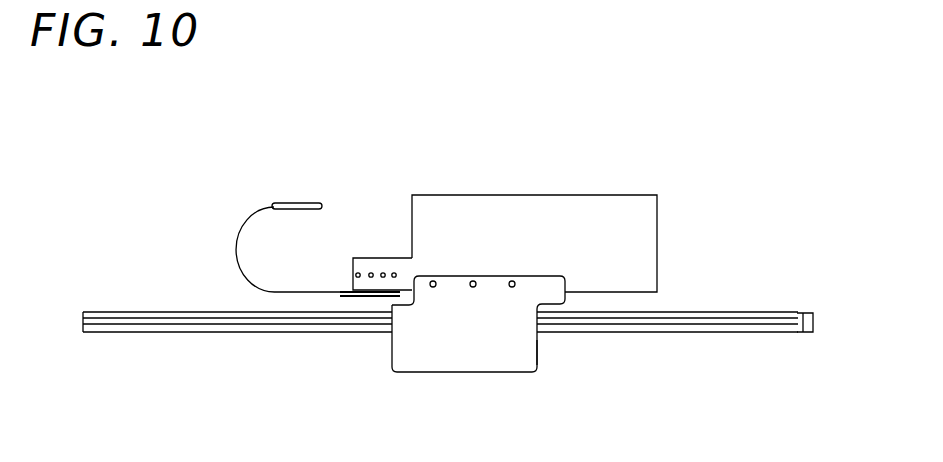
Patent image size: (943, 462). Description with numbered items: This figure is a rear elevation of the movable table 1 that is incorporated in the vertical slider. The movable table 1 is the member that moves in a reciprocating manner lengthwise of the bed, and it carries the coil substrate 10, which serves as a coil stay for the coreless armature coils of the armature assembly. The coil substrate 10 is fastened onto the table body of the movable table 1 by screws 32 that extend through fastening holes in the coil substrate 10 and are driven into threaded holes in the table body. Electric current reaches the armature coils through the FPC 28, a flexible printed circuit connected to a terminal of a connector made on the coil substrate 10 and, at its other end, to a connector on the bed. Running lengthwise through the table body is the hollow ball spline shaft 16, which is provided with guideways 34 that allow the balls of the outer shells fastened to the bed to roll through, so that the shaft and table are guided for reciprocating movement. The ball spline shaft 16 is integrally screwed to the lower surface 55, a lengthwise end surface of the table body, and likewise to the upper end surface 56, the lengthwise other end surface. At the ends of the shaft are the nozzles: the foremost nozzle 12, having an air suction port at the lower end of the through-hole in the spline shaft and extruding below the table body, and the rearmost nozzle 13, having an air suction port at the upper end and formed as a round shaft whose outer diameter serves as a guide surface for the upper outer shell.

The movable table 1 is at (470, 357).
The coil substrate 10 is at (580, 218).
The foremost nozzle 12 is at (802, 333).
The rearmost nozzle 13 is at (103, 327).
The ball spline shaft 16 is at (166, 312).
The FPC (Flexible Printed Circuits) 28 is at (244, 217).
The screws 32 is at (435, 281).
The guideways 34 is at (210, 324).
The lower surface 55 is at (535, 353).
The upper end surface 56 is at (390, 358).